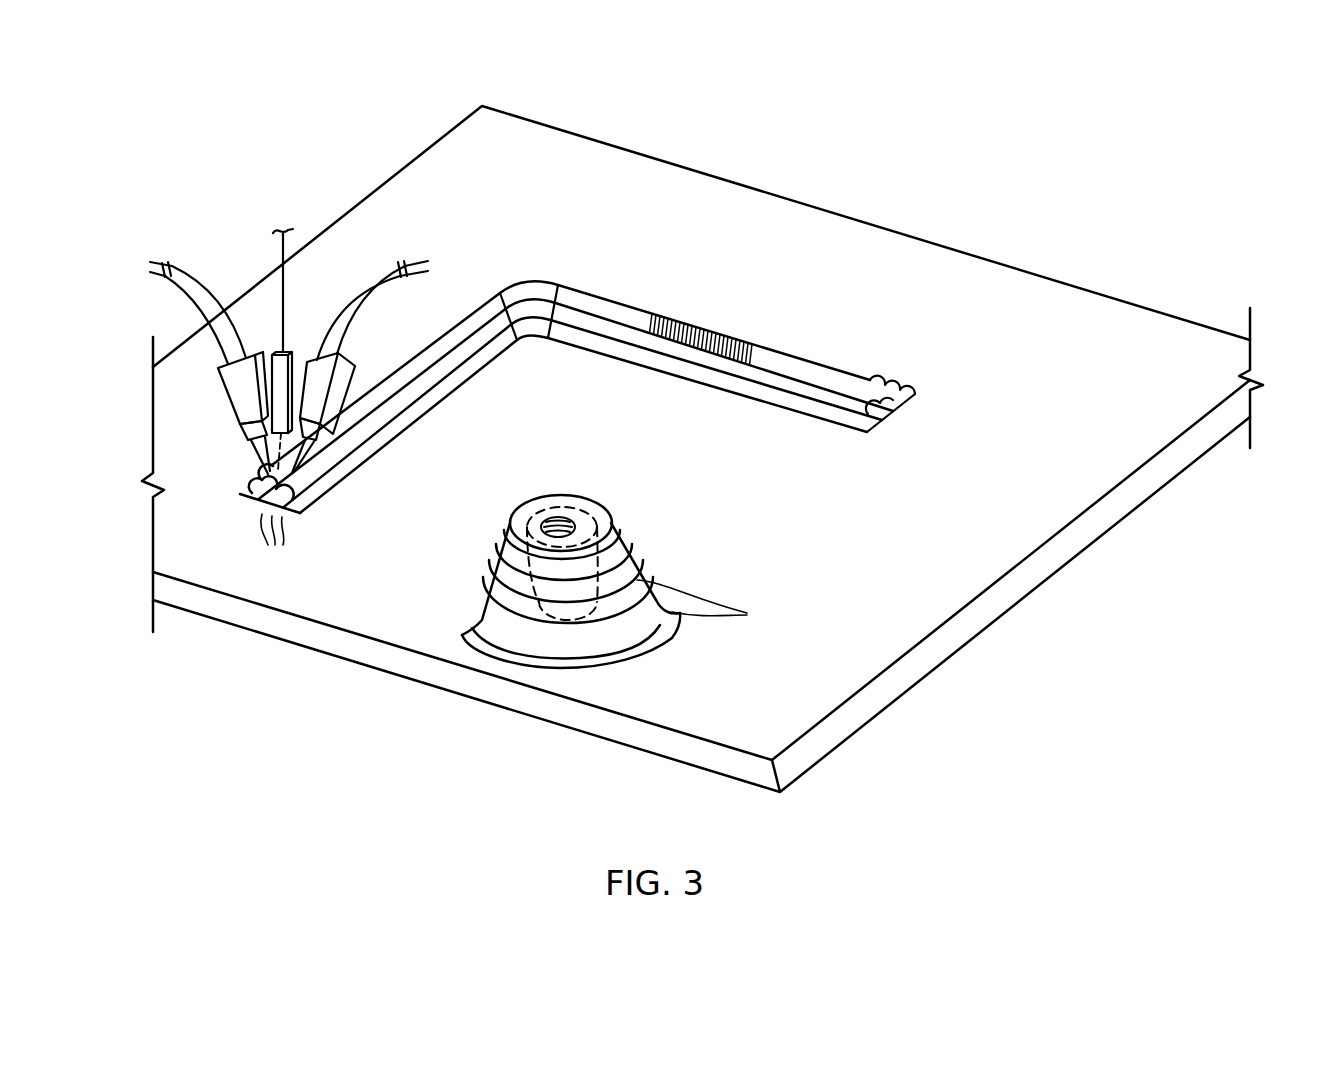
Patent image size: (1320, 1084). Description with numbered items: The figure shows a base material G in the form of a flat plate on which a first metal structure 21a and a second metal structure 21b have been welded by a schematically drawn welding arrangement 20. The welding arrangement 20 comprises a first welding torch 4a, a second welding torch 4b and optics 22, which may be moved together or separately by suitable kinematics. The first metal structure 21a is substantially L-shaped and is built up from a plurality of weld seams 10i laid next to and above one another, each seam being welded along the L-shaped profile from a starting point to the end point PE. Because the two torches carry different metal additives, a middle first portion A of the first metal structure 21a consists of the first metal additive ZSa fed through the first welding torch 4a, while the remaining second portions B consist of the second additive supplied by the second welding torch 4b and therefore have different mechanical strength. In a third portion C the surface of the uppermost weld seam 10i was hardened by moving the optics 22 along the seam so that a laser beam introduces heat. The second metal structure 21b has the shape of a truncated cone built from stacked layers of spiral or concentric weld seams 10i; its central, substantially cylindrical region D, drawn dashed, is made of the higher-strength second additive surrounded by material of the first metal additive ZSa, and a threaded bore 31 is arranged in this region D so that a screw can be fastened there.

The first welding torch 4a is at (237, 393).
The second welding torch 4b is at (332, 388).
The welding arrangement 20 is at (290, 355).
The optics 22 is at (266, 356).
The weld seams 10i is at (522, 569).
The first metal structure 21a is at (584, 357).
The second metal structure 21b is at (621, 578).
The bore 31 is at (513, 521).
The base material G is at (967, 556).
The third portion C is at (758, 333).
The first portion A is at (526, 270).
The second portions B is at (561, 358).
The central cylindrical region D is at (598, 520).
The first metal additive ZSa is at (573, 497).
The end point PE is at (902, 437).